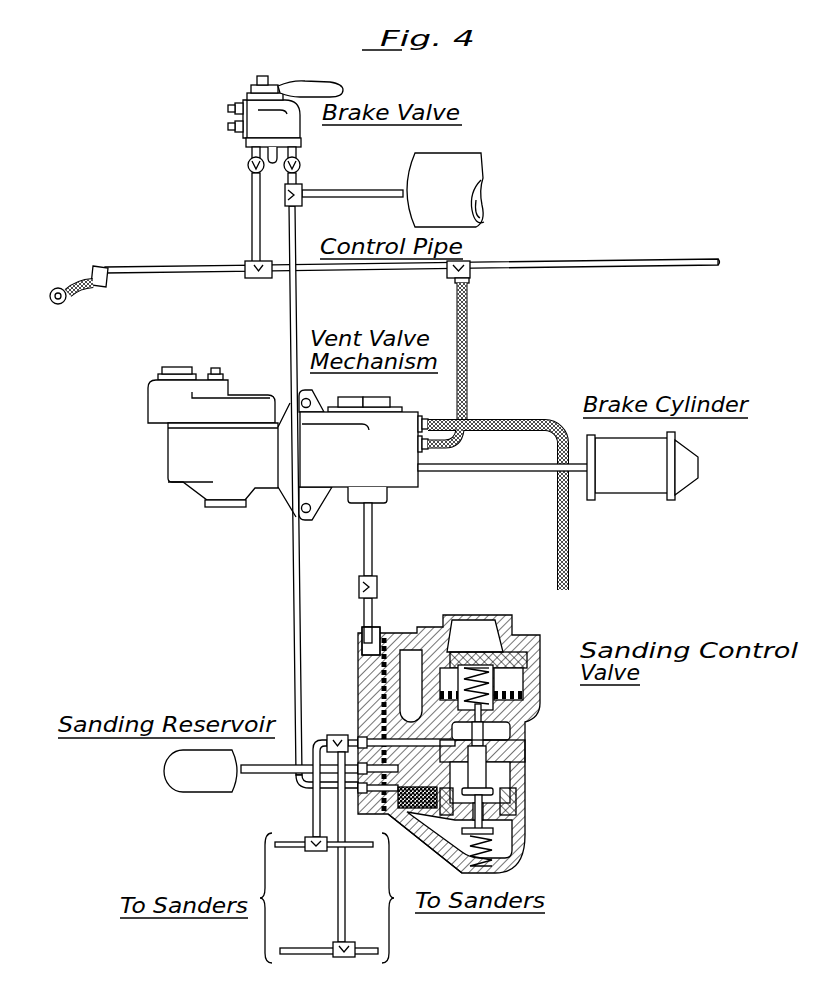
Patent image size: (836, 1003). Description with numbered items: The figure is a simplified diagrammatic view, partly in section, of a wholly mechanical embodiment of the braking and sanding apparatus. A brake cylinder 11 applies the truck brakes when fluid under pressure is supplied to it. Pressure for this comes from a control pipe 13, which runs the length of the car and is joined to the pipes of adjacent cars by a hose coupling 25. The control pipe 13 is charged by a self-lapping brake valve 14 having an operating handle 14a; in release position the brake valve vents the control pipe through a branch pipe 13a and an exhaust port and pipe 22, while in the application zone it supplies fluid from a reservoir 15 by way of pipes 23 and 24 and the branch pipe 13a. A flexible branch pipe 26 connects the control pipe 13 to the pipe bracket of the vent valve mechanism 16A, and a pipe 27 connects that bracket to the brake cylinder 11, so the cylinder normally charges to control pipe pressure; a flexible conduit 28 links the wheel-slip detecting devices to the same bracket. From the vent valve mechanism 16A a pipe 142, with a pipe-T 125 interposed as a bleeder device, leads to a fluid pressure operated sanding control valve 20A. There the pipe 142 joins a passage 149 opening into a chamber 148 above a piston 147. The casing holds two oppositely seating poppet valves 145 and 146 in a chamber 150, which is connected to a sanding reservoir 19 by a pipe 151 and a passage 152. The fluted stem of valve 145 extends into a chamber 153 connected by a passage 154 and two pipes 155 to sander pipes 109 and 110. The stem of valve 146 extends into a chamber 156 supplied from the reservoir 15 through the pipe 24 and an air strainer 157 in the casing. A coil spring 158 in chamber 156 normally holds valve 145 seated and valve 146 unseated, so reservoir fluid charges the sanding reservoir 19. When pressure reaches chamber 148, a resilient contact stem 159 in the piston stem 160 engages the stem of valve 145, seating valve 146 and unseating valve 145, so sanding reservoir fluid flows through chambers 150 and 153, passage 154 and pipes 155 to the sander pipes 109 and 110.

The brake cylinder 11 is at (700, 462).
The control pipe 13 is at (623, 264).
The branch pipe 13a is at (252, 216).
The brake valve 14 is at (236, 95).
The operating handle 14a is at (325, 86).
The reservoir 15 is at (468, 174).
The vent valve mechanism 16A is at (254, 391).
The sanding reservoir 19 is at (212, 795).
The sanding control valve 20A is at (482, 606).
The exhaust port and pipe 22 is at (246, 148).
The pipe 23 is at (333, 192).
The pipe 24 is at (292, 305).
The hose coupling 25 is at (90, 292).
The flexible branch pipe 26 is at (470, 306).
The brake cylinder pipe 27 is at (470, 474).
The flexible conduit 28 is at (557, 490).
The sander pipe 109 is at (302, 938).
The sander pipe 110 is at (292, 848).
The pipe-T 125 is at (379, 588).
The pipe 142 is at (372, 530).
The valve 145 is at (508, 768).
The valve 146 is at (522, 808).
The piston 147 is at (537, 647).
The chamber 148 is at (488, 634).
The passage 149 is at (364, 654).
The chamber 150 is at (500, 789).
The pipe 151 is at (266, 774).
The passage 152 is at (392, 808).
The chamber 153 is at (510, 750).
The passage 154 is at (385, 726).
The pipes 155 is at (327, 738).
The chamber 156 is at (507, 840).
The air strainer 157 is at (393, 818).
The coil spring 158 is at (495, 852).
The contact stem 159 is at (498, 733).
The piston stem 160 is at (497, 711).